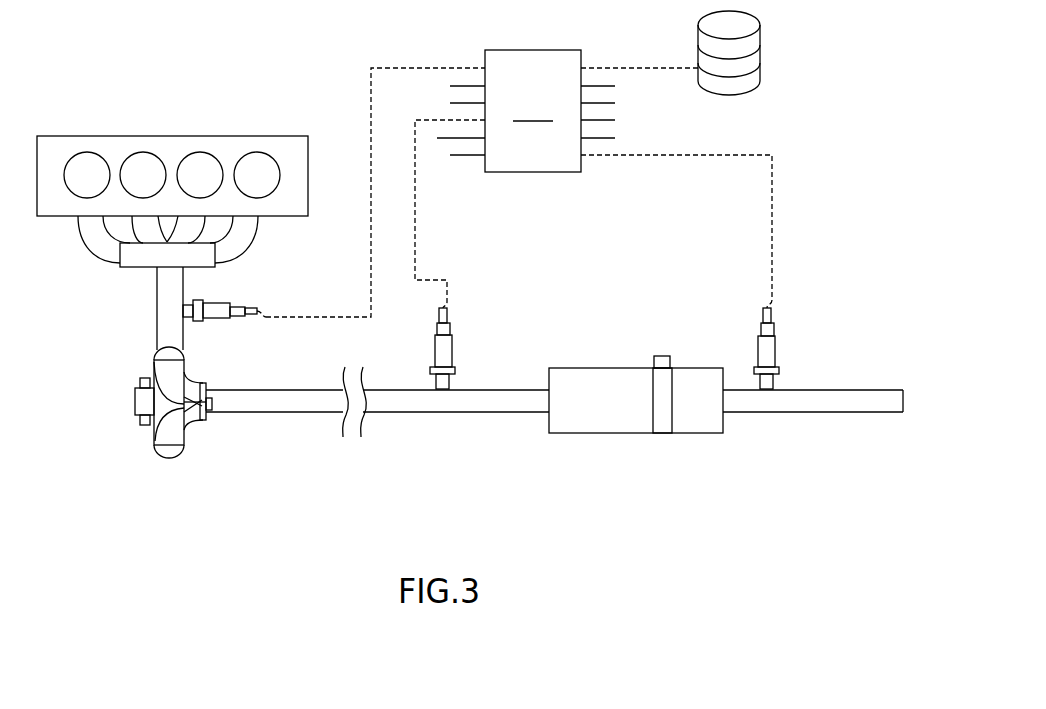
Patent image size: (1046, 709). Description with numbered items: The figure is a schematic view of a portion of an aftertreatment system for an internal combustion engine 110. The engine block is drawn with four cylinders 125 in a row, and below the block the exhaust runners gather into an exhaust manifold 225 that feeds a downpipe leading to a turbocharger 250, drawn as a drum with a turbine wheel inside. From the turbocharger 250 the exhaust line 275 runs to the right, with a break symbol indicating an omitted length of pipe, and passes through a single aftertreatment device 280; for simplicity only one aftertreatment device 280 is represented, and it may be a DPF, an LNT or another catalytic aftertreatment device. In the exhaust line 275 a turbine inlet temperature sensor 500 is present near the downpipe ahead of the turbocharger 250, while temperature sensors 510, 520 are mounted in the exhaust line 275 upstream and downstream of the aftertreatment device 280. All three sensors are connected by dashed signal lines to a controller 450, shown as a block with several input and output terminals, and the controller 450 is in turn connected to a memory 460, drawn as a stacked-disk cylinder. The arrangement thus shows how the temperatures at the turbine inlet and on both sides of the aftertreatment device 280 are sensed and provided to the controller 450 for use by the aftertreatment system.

The internal combustion engine 110 is at (180, 110).
The cylinder 125 is at (86, 152).
The exhaust manifold 225 is at (128, 268).
The turbocharger turbine 250 is at (187, 447).
The exhaust line 275 is at (827, 413).
The aftertreatment device 280 is at (599, 434).
The controller 450 is at (567, 111).
The memory 460 is at (762, 30).
The turbine inlet temperature sensor 500 is at (213, 320).
The temperature sensor 510 is at (452, 355).
The temperature sensor 520 is at (775, 355).